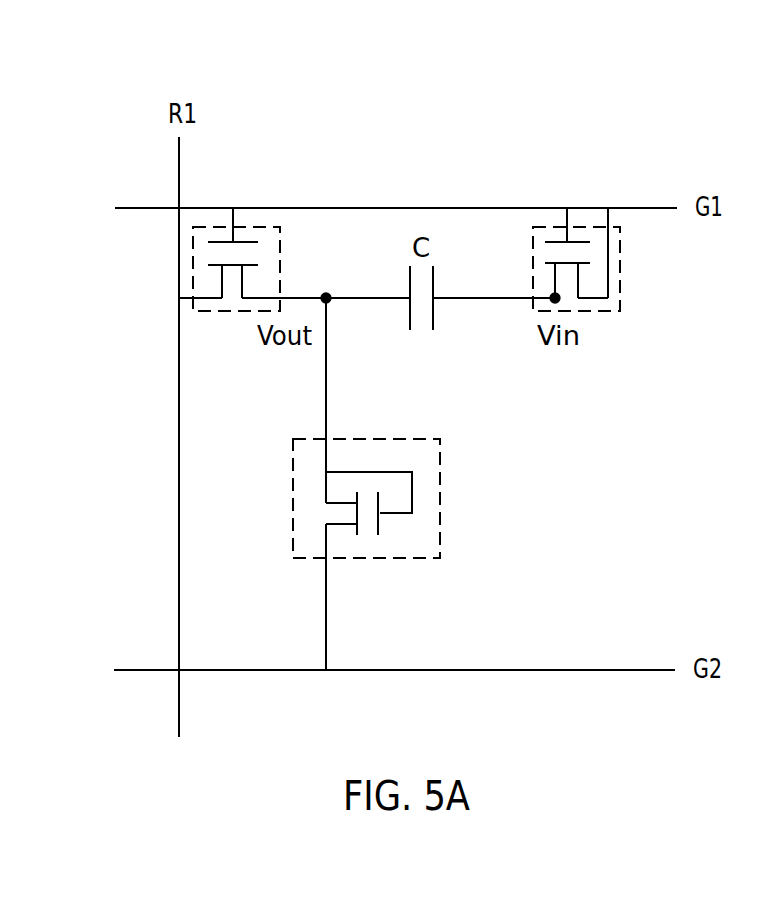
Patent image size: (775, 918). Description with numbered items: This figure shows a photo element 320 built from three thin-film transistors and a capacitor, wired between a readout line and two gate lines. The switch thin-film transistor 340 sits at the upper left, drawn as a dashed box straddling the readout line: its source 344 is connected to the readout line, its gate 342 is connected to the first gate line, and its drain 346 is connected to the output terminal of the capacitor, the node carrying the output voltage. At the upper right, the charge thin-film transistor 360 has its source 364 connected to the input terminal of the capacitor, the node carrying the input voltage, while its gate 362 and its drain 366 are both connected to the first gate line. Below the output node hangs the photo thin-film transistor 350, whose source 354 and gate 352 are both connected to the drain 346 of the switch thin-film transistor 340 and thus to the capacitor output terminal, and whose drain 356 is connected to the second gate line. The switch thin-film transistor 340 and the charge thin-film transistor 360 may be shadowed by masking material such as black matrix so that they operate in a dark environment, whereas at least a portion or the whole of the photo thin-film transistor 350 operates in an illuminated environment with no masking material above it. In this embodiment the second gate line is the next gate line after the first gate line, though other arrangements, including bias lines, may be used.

The photo element 320 is at (340, 93).
The switch thin-film transistor 340 is at (237, 243).
The gate 342 is at (237, 235).
The source 344 is at (222, 278).
The drain 346 is at (243, 282).
The photo thin-film transistor 350 is at (396, 510).
The gate 352 is at (393, 515).
The source 354 is at (339, 498).
The drain 356 is at (342, 525).
The charge thin-film transistor 360 is at (591, 251).
The gate 362 is at (592, 235).
The source 364 is at (555, 275).
The drain 366 is at (580, 280).